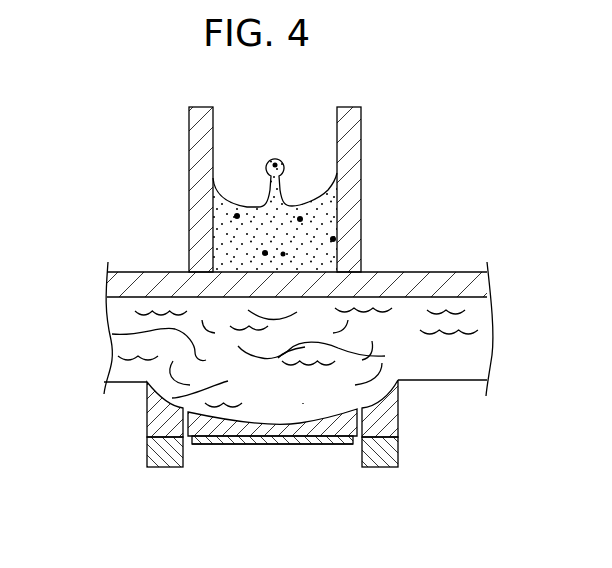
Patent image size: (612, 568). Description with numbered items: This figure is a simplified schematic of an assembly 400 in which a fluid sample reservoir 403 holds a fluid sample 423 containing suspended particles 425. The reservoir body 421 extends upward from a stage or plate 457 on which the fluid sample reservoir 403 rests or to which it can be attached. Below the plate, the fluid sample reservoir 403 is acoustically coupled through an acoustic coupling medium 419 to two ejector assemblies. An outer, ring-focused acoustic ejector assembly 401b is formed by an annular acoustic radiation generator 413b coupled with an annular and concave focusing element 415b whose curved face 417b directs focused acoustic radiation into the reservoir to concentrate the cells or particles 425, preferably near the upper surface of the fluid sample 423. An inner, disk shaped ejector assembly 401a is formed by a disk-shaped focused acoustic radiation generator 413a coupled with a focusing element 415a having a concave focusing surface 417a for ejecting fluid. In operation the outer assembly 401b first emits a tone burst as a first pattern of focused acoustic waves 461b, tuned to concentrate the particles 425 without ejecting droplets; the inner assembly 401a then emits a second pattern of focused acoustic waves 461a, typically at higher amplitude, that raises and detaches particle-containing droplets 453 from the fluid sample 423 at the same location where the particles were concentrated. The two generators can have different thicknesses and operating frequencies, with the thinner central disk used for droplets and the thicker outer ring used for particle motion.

The assembly 400 is at (420, 100).
The fluid sample reservoir 403 is at (121, 194).
The reservoir body 421 is at (362, 160).
The fluid sample 423 is at (237, 207).
The suspended particles 425 is at (237, 216).
The particle-containing droplets 453 is at (282, 157).
The stage or plate 457 is at (382, 272).
The acoustic coupling medium 419 is at (475, 348).
The second pattern of focused acoustic waves 461a is at (385, 356).
The first pattern of focused acoustic waves 461b is at (112, 334).
The focusing element 415a is at (356, 424).
The annular and concave focusing element 415b is at (147, 397).
The disk-shaped focused acoustic radiation generator 413a is at (282, 445).
The annular acoustic radiation generator 413b is at (157, 452).
The concave focusing surface 417a is at (303, 403).
The curved face 417b is at (302, 405).
The inner disk shaped ejector assembly 401a is at (254, 473).
The outer ring-focused acoustic ejector assembly 401b is at (132, 474).